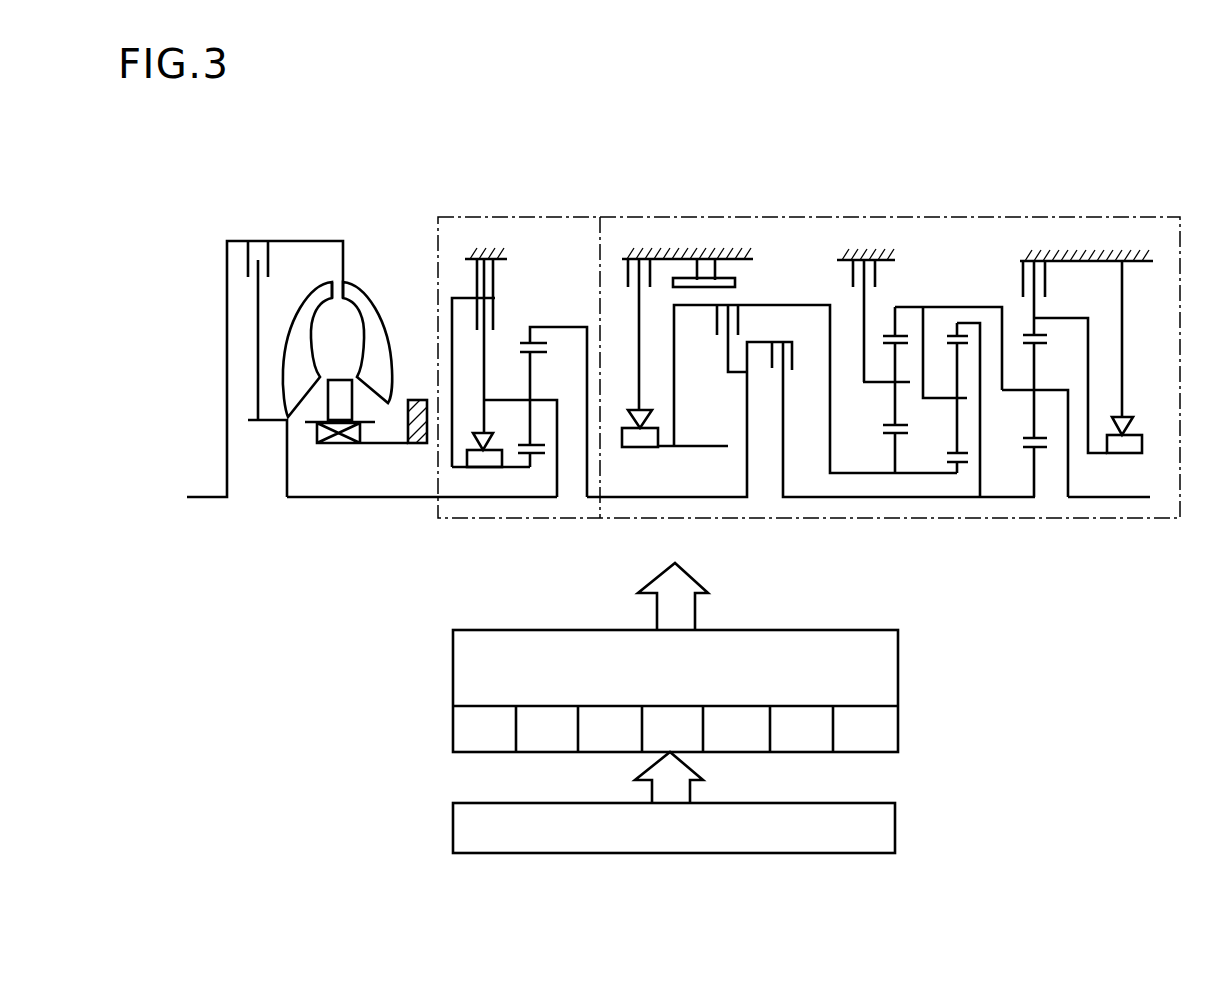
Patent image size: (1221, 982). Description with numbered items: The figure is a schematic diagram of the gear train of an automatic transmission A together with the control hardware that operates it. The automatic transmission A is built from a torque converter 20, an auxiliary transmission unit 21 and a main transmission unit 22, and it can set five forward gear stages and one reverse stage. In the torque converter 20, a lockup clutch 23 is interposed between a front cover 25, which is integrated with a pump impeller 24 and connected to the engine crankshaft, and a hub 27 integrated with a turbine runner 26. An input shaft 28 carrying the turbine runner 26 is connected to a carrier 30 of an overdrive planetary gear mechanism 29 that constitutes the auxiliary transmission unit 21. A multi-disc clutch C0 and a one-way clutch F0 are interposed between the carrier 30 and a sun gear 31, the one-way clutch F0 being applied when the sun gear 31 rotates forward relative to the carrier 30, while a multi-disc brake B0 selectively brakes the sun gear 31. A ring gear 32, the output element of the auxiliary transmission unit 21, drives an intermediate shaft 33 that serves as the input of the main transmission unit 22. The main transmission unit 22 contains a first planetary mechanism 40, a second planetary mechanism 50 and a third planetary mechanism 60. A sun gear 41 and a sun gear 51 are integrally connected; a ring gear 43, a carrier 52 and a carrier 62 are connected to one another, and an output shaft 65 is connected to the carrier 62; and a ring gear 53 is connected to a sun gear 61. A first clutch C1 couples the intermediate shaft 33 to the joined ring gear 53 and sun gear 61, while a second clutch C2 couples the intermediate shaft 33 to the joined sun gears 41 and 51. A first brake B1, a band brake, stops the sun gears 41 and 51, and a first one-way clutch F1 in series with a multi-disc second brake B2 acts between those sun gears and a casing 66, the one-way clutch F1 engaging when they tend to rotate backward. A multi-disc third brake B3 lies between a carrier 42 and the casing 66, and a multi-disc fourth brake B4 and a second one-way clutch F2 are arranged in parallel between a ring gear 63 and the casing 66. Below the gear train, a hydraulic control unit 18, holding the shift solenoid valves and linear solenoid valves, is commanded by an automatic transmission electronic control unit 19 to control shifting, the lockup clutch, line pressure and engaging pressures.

The hydraulic control unit 18 is at (893, 657).
The automatic transmission electronic control unit 19 is at (892, 833).
The torque converter 20 is at (357, 237).
The auxiliary transmission unit 21 is at (585, 520).
The main transmission unit 22 is at (922, 220).
The lockup clutch 23 is at (248, 257).
The pump impeller 24 is at (383, 407).
The front cover 25 is at (227, 323).
The turbine runner 26 is at (317, 283).
The hub 27 is at (268, 423).
The input shaft 28 is at (327, 497).
The overdrive planetary gear mechanism 29 is at (515, 478).
The carrier 30 is at (540, 400).
The sun gear 31 is at (533, 460).
The ring gear 32 is at (527, 340).
The intermediate shaft 33 is at (690, 498).
The first planetary mechanism 40 is at (885, 478).
The sun gear 41 is at (887, 437).
The carrier 42 is at (873, 383).
The ring gear 43 is at (902, 333).
The second planetary mechanism 50 is at (958, 482).
The sun gear 51 is at (948, 462).
The carrier 52 is at (920, 397).
The ring gear 53 is at (950, 333).
The third planetary mechanism 60 is at (1047, 490).
The sun gear 61 is at (1027, 447).
The carrier 62 is at (1067, 390).
The ring gear 63 is at (1015, 313).
The output shaft 65 is at (1130, 503).
The casing 66 is at (678, 252).
The automatic transmission A is at (777, 212).
The multi-disc brake B0 is at (473, 267).
The first brake B1 is at (725, 267).
The second brake B2 is at (627, 270).
The third brake B3 is at (853, 280).
The fourth brake B4 is at (1048, 277).
The clutch C0 is at (475, 315).
The first clutch C1 is at (792, 357).
The second clutch C2 is at (715, 318).
The one-way clutch F0 is at (483, 460).
The first one-way clutch F1 is at (640, 447).
The second one-way clutch F2 is at (1132, 437).